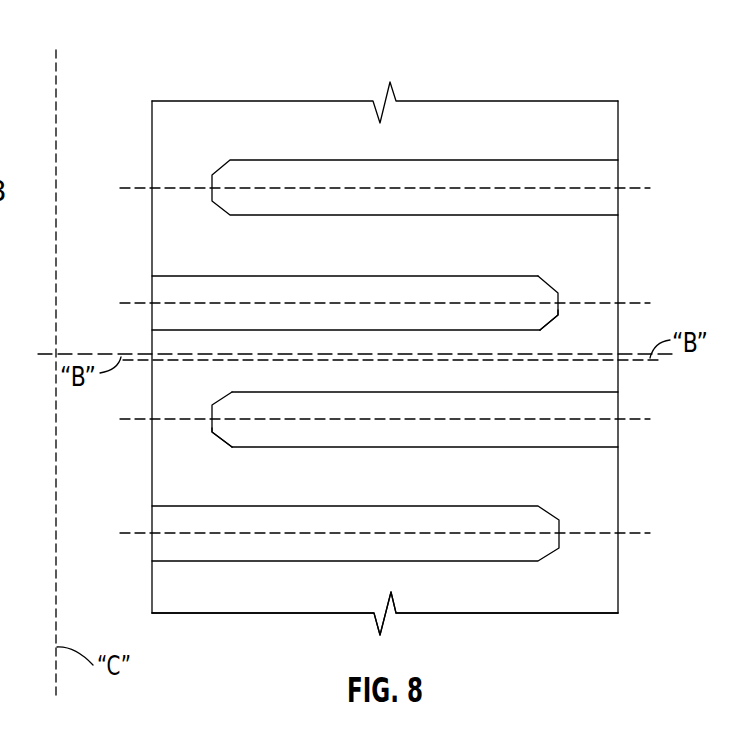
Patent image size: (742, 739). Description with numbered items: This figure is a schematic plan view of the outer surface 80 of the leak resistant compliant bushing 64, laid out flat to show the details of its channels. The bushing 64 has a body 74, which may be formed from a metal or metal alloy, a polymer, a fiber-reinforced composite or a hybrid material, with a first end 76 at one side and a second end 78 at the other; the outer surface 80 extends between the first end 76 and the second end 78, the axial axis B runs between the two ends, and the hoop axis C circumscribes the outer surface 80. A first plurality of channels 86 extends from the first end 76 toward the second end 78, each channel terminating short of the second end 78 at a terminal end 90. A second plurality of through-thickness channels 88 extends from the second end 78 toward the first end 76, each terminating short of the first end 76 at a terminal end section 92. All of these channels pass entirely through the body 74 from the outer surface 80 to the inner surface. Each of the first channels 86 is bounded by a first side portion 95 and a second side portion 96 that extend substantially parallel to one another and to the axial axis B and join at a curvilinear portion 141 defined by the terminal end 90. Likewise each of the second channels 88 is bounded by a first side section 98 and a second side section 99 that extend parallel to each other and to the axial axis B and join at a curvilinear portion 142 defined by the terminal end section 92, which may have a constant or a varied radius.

The leak resistant compliant bushing 64 is at (556, 621).
The body 74 is at (598, 572).
The first end 76 is at (152, 128).
The second end 78 is at (618, 119).
The outer surface 80 is at (227, 112).
The first plurality of channels 86 is at (373, 306).
The second plurality of through-thickness channels 88 is at (418, 421).
The terminal end 90 is at (560, 293).
The terminal end section 92 is at (212, 412).
The first side portion 95 is at (316, 276).
The second side portion 96 is at (291, 330).
The first side section 98 is at (369, 392).
The second side section 99 is at (345, 447).
The curvilinear portion 141 is at (555, 318).
The curvilinear portion 142 is at (225, 443).